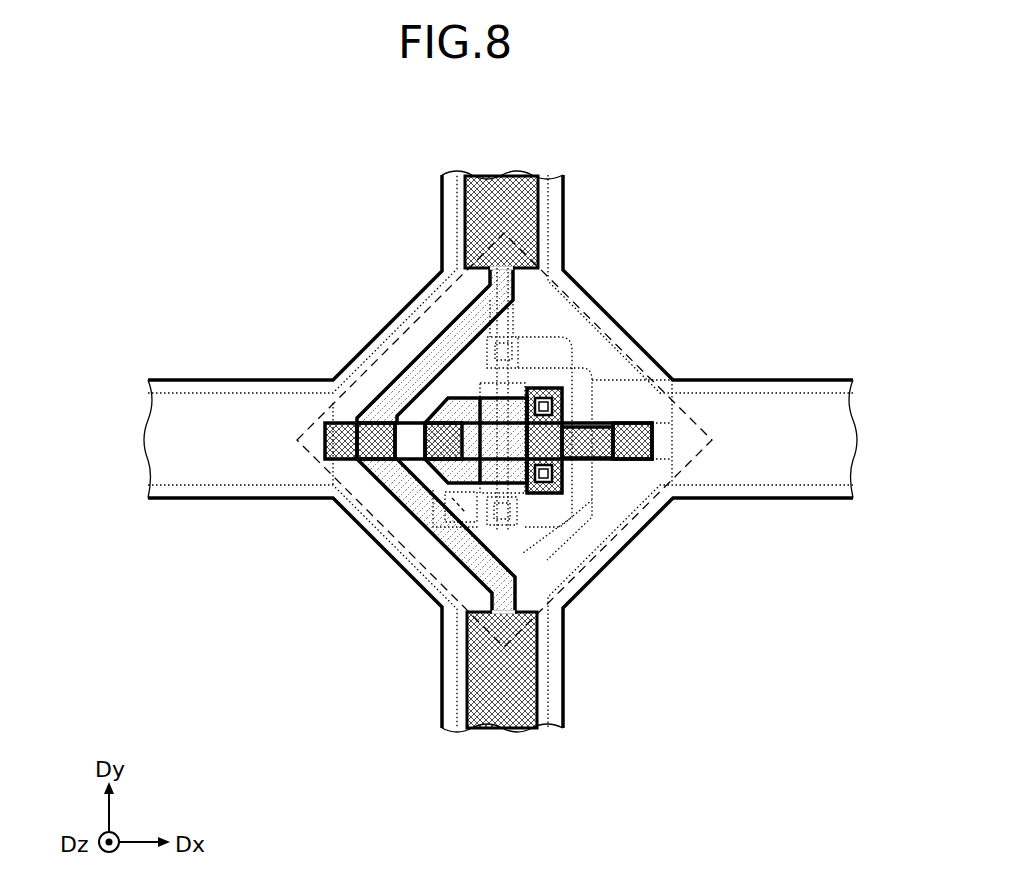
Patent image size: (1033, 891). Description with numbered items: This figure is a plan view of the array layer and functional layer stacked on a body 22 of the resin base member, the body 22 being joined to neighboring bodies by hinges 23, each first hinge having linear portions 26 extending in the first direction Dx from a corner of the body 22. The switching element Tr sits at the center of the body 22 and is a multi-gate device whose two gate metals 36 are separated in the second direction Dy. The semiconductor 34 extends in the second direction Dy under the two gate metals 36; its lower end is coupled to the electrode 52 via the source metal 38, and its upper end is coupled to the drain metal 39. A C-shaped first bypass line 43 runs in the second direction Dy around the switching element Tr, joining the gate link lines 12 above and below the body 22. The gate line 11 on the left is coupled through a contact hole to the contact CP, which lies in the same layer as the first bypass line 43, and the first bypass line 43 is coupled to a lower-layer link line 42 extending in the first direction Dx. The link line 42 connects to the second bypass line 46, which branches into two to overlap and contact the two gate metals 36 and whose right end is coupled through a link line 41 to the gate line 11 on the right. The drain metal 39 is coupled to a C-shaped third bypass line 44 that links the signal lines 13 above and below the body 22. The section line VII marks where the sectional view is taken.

The gate line 11 is at (803, 393).
The gate link line 12 is at (505, 184).
The signal line 13 is at (560, 196).
The body 22 is at (422, 588).
The hinge 23 is at (818, 500).
The linear portion 26 is at (440, 213).
The semiconductor 34 is at (523, 378).
The gate metal 36 is at (425, 395).
The source metal 38 is at (562, 558).
The drain metal 39 is at (487, 352).
The link line 41 is at (670, 388).
The link line 42 is at (395, 500).
The first bypass line 43 is at (465, 305).
The third bypass line 44 is at (660, 390).
The second bypass line 46 is at (605, 461).
The electrode 52 is at (585, 292).
The contact CP is at (340, 498).
The switching element Tr is at (472, 446).
The section line VII-VII' VII is at (495, 213).